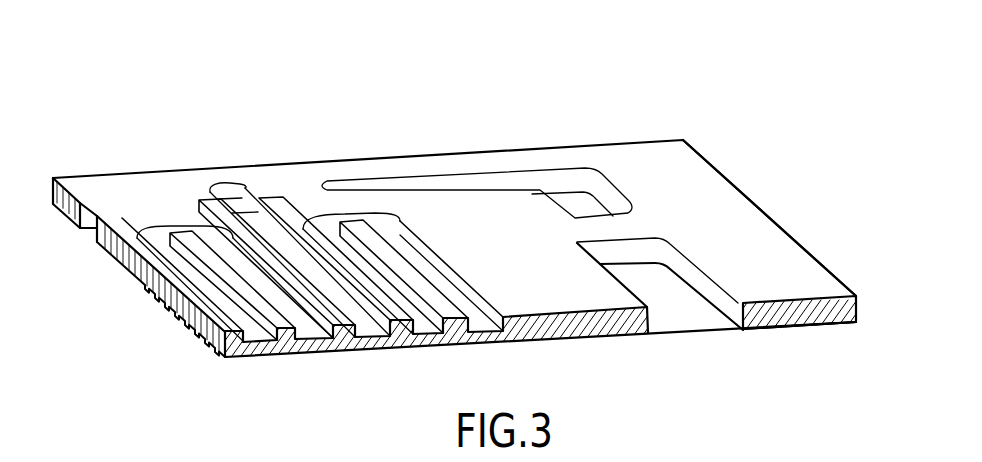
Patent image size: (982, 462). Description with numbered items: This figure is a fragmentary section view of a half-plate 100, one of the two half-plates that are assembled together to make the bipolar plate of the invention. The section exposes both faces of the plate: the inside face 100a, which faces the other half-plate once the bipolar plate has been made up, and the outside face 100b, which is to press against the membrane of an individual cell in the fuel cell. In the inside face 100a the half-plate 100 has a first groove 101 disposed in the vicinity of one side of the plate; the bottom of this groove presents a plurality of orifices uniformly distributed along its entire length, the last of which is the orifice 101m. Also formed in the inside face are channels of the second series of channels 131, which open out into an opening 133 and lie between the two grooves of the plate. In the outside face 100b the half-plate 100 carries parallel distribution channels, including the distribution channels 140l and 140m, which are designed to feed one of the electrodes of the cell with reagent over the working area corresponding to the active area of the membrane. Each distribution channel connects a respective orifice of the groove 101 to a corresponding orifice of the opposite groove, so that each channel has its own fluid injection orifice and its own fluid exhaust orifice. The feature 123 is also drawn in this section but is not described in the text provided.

The half-plate 100 is at (143, 140).
The first groove 101 is at (88, 226).
The orifice 101m is at (227, 182).
The distribution channel 140l is at (177, 230).
The distribution channel 140m is at (333, 212).
The through slot 123 is at (538, 183).
The opening 133 is at (717, 300).
The outside face 100b is at (765, 248).
The inside face 100a is at (786, 330).
The second series of channels 131 is at (208, 344).